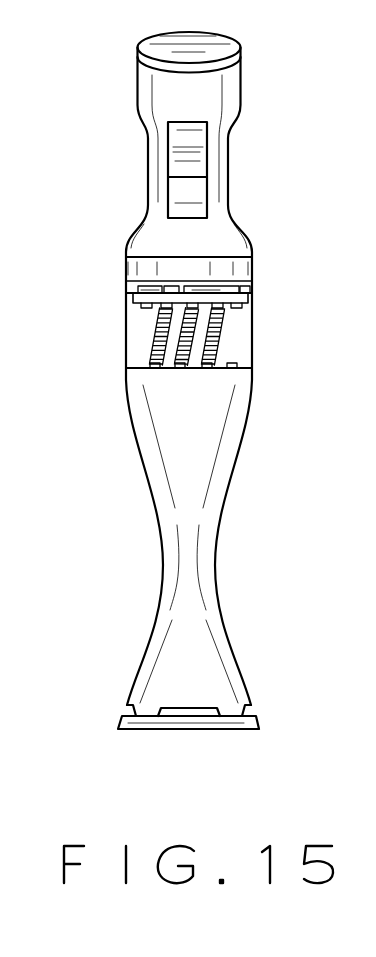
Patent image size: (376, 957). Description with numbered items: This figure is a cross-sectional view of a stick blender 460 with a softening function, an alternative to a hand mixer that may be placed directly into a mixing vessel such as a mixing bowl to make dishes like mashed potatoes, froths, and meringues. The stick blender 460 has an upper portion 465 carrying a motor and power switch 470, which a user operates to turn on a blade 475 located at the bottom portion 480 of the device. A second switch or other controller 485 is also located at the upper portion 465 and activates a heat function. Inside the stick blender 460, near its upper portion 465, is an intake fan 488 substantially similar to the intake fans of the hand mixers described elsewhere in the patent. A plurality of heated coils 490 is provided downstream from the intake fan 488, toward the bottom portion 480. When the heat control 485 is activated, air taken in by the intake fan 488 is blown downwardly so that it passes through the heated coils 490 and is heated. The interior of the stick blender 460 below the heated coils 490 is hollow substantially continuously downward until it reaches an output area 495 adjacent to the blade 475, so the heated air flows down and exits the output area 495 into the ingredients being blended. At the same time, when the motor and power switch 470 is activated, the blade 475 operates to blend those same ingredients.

The stick blender 460 is at (101, 414).
The upper portion 465 is at (277, 126).
The motor and power switch 470 is at (187, 143).
The blade 475 is at (131, 729).
The bottom portion 480 is at (267, 702).
The second switch or other controller 485 is at (183, 192).
The intake fan 488 is at (220, 292).
The heated coils 490 is at (155, 328).
The output area 495 is at (197, 713).